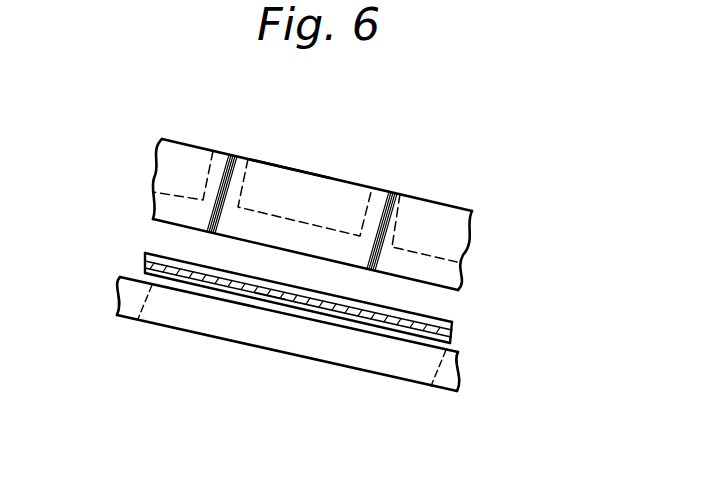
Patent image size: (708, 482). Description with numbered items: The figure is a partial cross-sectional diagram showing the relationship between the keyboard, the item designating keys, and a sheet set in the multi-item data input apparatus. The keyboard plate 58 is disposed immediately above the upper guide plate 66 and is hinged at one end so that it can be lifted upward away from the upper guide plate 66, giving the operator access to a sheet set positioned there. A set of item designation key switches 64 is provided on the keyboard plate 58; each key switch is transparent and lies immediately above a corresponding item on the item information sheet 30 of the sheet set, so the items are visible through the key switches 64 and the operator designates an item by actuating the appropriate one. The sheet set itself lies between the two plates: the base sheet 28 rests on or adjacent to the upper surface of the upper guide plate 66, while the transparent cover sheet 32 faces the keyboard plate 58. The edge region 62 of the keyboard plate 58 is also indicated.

The keyboard plate 58 is at (163, 202).
The item designation key switches 64 is at (189, 160).
The edge of keyboard plate 62 is at (289, 156).
The transparent cover sheet 32 is at (150, 257).
The base sheet 28 is at (218, 283).
The item information sheet 30 is at (270, 293).
The upper guide plate 66 is at (325, 342).